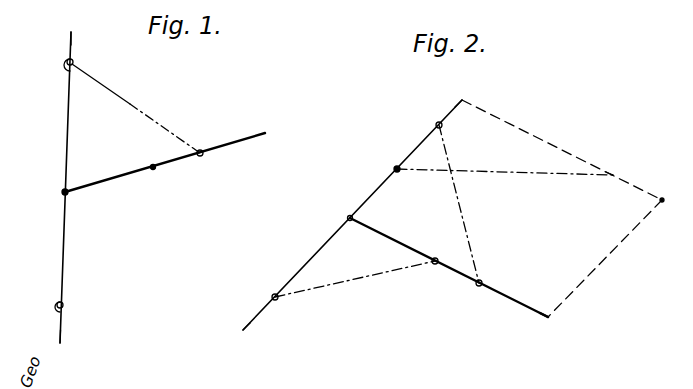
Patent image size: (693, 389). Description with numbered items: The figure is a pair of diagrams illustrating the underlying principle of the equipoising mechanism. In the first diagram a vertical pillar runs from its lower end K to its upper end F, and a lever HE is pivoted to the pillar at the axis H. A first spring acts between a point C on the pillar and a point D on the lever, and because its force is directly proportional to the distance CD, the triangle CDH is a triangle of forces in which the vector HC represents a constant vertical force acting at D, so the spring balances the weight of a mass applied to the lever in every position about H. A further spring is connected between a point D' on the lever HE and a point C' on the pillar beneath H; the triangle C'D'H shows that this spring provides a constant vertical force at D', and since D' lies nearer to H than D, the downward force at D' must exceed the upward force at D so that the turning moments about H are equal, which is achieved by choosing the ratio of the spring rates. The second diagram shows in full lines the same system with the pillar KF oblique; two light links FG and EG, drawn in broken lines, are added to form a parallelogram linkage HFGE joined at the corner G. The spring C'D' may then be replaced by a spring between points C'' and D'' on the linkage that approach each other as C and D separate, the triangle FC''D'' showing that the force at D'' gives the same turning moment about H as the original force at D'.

In FIG. 1, the upper end of pillar F is at (71, 33).
In FIG. 2, the upper end of pillar F is at (460, 92).
In FIG. 1, the spring attachment point on pillar C is at (77, 81).
In FIG. 2, the spring attachment point on pillar C is at (432, 118).
In FIG. 1, the second spring attachment point on pillar C' is at (76, 315).
In FIG. 2, the second spring attachment point on pillar C' is at (267, 293).
In FIG. 2, the replacement spring attachment point C'' is at (389, 162).
In FIG. 1, the pivot axis H is at (66, 196).
In FIG. 2, the pivot axis H is at (342, 215).
In FIG. 1, the free end of lever E is at (171, 159).
In FIG. 2, the free end of lever E is at (547, 325).
In FIG. 1, the spring attachment point on lever D is at (217, 195).
In FIG. 2, the spring attachment point on lever D is at (475, 295).
In FIG. 1, the second spring attachment point on lever D' is at (161, 211).
In FIG. 2, the second spring attachment point on lever D' is at (433, 272).
In FIG. 2, the replacement spring attachment point on linkage D'' is at (622, 166).
In FIG. 2, the parallelogram linkage corner G is at (672, 202).
In FIG. 1, the lower end of pillar K is at (67, 345).
In FIG. 2, the lower end of pillar K is at (244, 337).